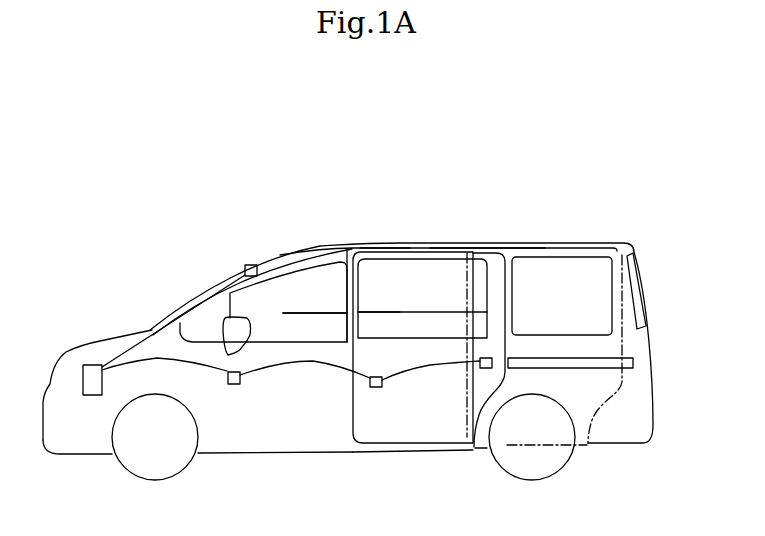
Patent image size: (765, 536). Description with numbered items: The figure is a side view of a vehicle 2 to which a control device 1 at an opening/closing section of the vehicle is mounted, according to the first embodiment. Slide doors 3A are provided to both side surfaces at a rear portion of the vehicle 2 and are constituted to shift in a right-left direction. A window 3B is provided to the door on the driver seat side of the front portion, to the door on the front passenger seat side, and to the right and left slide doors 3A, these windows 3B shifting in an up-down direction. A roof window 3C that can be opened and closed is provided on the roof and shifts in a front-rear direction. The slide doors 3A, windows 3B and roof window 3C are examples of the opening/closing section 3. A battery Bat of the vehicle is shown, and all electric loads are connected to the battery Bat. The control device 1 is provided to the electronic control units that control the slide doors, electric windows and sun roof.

The control device 1 is at (480, 362).
The vehicle 2 is at (623, 242).
The opening/closing section 3 is at (260, 150).
The slide door 3A is at (535, 247).
The window 3B is at (387, 312).
The roof window 3C is at (383, 254).
The battery Bat is at (83, 365).